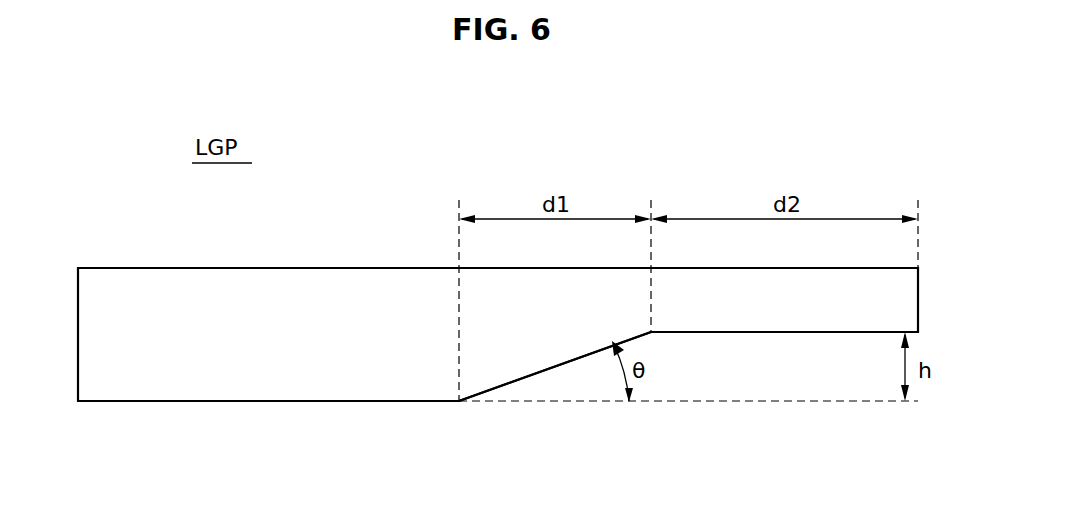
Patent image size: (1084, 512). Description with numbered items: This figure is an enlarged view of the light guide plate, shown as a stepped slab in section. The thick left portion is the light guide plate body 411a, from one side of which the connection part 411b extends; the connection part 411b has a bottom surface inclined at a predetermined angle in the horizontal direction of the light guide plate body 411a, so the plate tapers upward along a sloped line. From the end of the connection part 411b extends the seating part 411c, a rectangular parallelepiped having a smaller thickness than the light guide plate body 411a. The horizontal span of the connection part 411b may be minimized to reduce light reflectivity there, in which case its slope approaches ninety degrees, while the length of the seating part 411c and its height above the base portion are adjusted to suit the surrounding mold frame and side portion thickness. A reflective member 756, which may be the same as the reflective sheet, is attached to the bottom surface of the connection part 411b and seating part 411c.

The light guide plate body 411a is at (250, 372).
The connection part 411b is at (535, 336).
The reflective member 756 is at (722, 334).
The seating part 411c is at (803, 304).